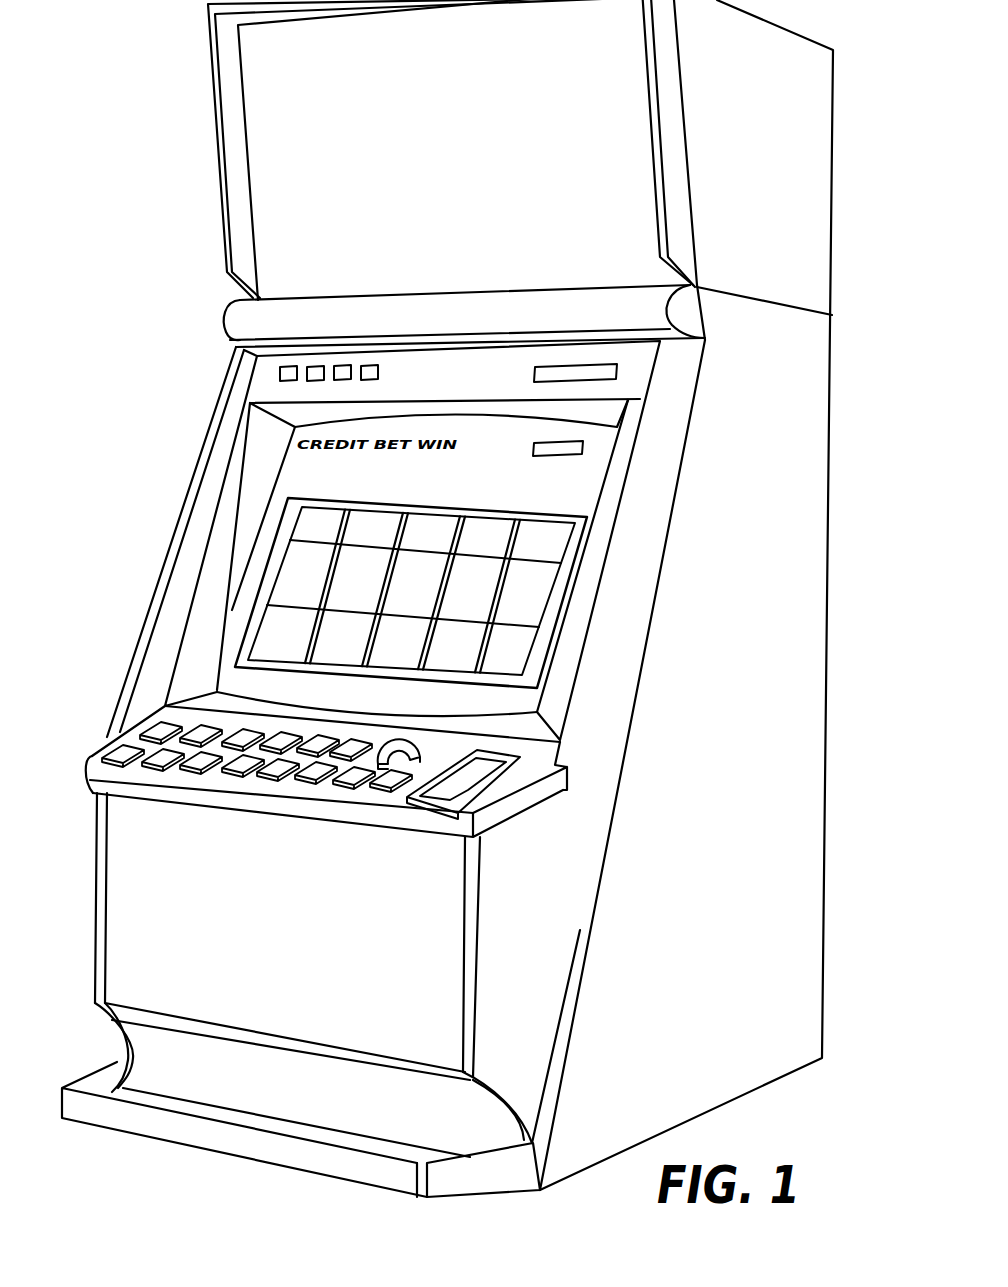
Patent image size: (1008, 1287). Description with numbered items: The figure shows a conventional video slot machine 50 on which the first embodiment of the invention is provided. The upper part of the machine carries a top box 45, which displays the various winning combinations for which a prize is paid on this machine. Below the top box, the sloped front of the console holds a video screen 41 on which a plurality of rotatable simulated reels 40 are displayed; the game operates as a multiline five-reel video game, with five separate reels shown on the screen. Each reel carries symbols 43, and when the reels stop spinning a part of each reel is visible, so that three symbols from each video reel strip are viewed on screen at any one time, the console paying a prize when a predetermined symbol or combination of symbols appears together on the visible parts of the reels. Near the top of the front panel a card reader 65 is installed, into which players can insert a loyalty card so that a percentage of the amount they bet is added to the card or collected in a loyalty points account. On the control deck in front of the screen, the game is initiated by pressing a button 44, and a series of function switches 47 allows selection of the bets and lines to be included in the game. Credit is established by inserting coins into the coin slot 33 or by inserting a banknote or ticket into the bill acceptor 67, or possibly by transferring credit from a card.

The coin slot 33 is at (537, 710).
The simulated reels 40 is at (563, 504).
The video screen 41 is at (267, 525).
The symbols 43 is at (373, 532).
The button 44 is at (387, 795).
The top box 45 is at (298, 223).
The function switches 47 is at (206, 790).
The slot machine 50 is at (83, 563).
The card reader 65 is at (592, 380).
The bill acceptor 67 is at (467, 775).